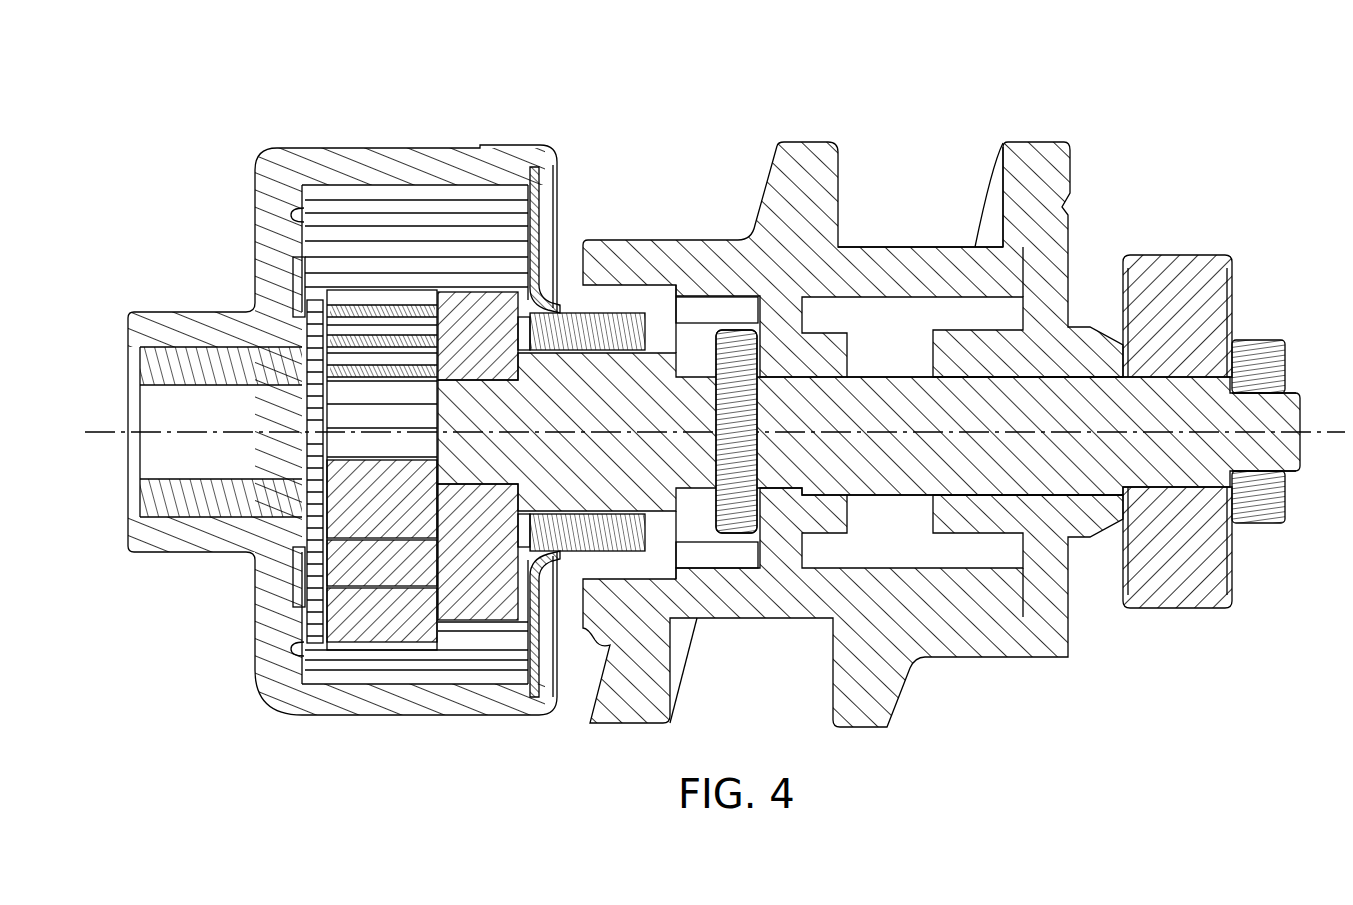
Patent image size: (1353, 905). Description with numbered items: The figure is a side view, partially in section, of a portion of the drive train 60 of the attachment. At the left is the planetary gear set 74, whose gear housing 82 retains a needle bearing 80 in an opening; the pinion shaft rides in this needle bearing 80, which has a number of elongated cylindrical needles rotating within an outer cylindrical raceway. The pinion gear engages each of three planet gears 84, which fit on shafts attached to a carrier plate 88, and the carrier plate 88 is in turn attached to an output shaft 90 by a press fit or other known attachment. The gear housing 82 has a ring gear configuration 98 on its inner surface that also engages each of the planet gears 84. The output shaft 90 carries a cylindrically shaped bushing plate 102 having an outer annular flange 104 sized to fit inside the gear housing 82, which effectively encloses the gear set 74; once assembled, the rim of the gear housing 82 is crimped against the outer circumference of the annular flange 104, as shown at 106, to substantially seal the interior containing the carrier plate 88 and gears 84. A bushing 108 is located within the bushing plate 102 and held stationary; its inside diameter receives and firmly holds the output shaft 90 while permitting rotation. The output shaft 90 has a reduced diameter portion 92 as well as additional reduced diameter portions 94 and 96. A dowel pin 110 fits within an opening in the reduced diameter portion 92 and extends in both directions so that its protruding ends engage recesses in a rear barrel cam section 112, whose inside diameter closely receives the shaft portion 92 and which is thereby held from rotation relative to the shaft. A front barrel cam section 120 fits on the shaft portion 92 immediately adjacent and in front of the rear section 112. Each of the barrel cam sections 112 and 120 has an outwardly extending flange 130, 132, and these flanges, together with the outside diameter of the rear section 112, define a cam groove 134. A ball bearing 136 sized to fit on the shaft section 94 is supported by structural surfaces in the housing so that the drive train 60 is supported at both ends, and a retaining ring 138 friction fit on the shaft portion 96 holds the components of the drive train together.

The starter drive assembly 60 is at (1012, 74).
The planetary gear set 74 is at (410, 140).
The needle bearing 80 is at (190, 497).
The gear housing 82 is at (285, 178).
The planet gears 84 is at (322, 300).
The carrier plate 88 is at (463, 597).
The output shaft 90 is at (653, 392).
The reduced diameter portion 92 is at (875, 410).
The reduced diameter portion 94 is at (1167, 407).
The reduced diameter portion 96 is at (1275, 413).
The ring gear configuration 98 is at (456, 220).
The bushing plate 102 is at (643, 597).
The annular flange 104 is at (545, 668).
The crimp 106 is at (557, 178).
The bushing 108 is at (607, 310).
The dowel pin 110 is at (741, 507).
The rear barrel cam section 112 is at (892, 246).
The front barrel cam section 120 is at (975, 658).
The flange 130 is at (800, 180).
The flange 132 is at (1033, 165).
The cam groove 134 is at (940, 187).
The ball bearing 136 is at (1180, 578).
The retaining ring 138 is at (1257, 505).